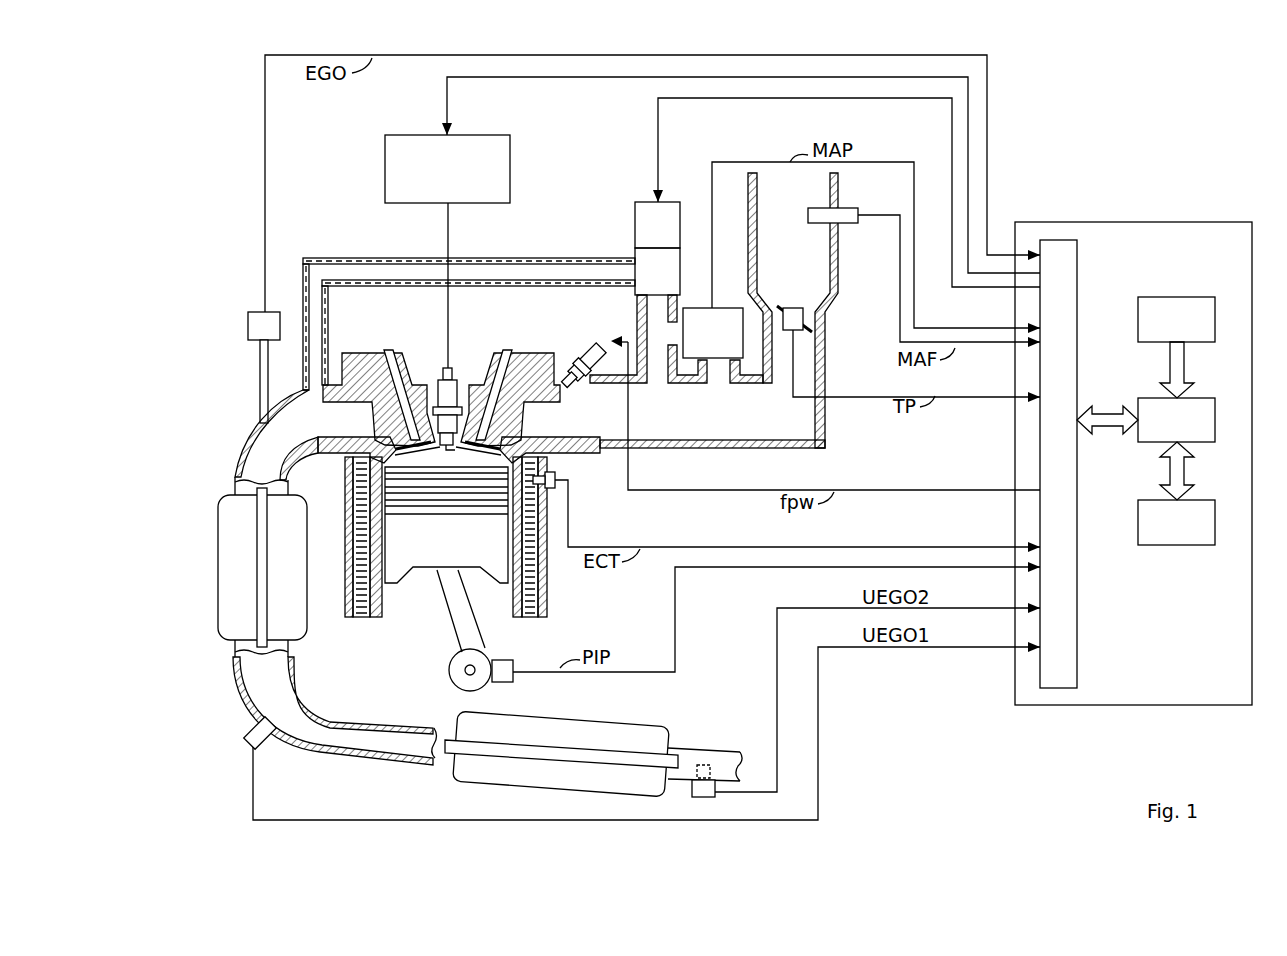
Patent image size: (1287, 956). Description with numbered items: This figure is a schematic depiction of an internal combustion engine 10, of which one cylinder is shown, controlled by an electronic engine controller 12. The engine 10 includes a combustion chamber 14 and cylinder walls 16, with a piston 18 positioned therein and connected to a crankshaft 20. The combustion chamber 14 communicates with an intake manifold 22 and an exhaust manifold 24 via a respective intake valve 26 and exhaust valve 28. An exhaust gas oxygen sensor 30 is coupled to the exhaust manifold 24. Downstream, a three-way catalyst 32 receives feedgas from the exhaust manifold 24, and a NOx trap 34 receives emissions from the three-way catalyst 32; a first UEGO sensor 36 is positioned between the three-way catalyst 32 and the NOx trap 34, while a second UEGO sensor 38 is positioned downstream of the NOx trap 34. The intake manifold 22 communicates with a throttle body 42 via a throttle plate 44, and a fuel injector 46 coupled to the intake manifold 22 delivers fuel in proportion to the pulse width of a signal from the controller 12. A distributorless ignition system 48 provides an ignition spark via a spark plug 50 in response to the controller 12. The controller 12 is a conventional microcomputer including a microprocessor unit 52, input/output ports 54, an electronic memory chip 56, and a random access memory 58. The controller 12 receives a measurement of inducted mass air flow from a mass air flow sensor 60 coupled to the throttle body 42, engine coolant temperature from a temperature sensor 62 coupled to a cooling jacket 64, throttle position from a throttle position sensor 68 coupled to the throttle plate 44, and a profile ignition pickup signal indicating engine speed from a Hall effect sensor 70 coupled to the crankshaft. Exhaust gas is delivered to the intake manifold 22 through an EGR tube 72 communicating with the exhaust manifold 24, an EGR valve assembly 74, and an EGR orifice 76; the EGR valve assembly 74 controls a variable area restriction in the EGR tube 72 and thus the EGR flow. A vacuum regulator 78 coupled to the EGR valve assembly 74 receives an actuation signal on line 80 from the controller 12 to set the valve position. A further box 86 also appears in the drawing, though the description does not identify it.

The internal combustion engine 10 is at (372, 676).
The electronic engine controller 12 is at (1205, 224).
The combustion chamber 14 is at (437, 457).
The cylinder walls 16 is at (387, 607).
The piston 18 is at (447, 567).
The crankshaft 20 is at (470, 688).
The intake manifold 22 is at (712, 428).
The exhaust manifold 24 is at (258, 450).
The intake valve 26 is at (500, 432).
The exhaust valve 28 is at (393, 432).
The exhaust gas oxygen sensor 30 is at (258, 312).
The three-way catalyst 32 is at (218, 565).
The NOx trap 34 is at (630, 722).
The first UEGO sensor 36 is at (250, 738).
The second UEGO sensor 38 is at (710, 790).
The throttle body 42 is at (826, 196).
The throttle plate 44 is at (790, 306).
The fuel injector 46 is at (586, 352).
The distributorless ignition system 48 is at (470, 135).
The spark plug 50 is at (452, 370).
The microprocessor unit 52 is at (1188, 398).
The input/output ports 54 is at (1078, 280).
The electronic memory chip 56 is at (1168, 297).
The random access memory 58 is at (1188, 500).
The mass air flow sensor 60 is at (845, 223).
The temperature sensor 62 is at (558, 478).
The cooling jacket 64 is at (550, 598).
The throttle position sensor 68 is at (798, 292).
The Hall effect sensor 70 is at (505, 660).
The EGR tube 72 is at (350, 262).
The EGR valve assembly 74 is at (657, 271).
The EGR orifice 76 is at (657, 380).
The vacuum regulator 78 is at (657, 225).
The line 80 is at (652, 118).
The fuel rail 86 is at (713, 333).